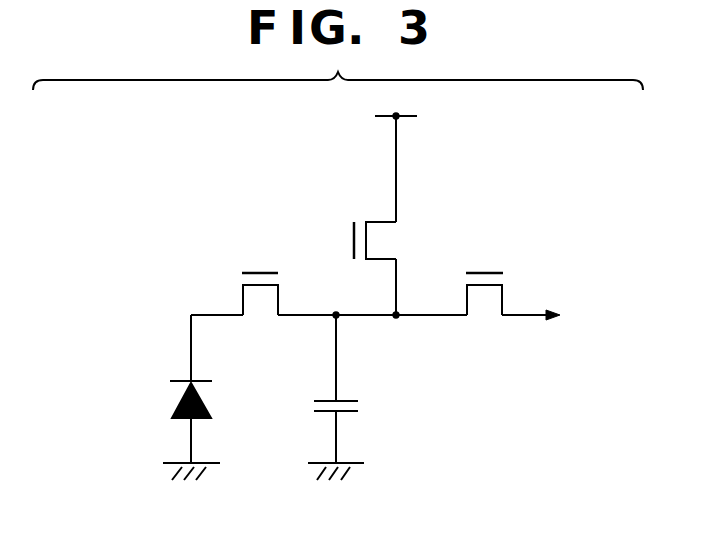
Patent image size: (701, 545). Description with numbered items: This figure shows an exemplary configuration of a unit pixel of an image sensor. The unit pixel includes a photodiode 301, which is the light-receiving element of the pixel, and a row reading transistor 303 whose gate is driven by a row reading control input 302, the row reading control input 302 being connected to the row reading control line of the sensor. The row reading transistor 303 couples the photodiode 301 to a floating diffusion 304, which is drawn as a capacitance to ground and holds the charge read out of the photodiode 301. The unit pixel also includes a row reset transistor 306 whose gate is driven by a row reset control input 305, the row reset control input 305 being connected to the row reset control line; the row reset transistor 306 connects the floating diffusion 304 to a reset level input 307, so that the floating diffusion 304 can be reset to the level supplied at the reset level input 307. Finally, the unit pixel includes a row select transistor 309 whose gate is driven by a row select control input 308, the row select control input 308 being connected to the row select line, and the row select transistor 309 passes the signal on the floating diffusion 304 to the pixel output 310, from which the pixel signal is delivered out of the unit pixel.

The photodiode 301 is at (212, 405).
The row reading control input 302 is at (262, 273).
The row reading transistor 303 is at (258, 310).
The floating diffusion 304 is at (360, 406).
The row reset control input 305 is at (354, 240).
The row reset transistor 306 is at (393, 237).
The reset level input 307 is at (372, 117).
The row select control input 308 is at (484, 273).
The row select transistor 309 is at (484, 308).
The pixel output 310 is at (554, 317).